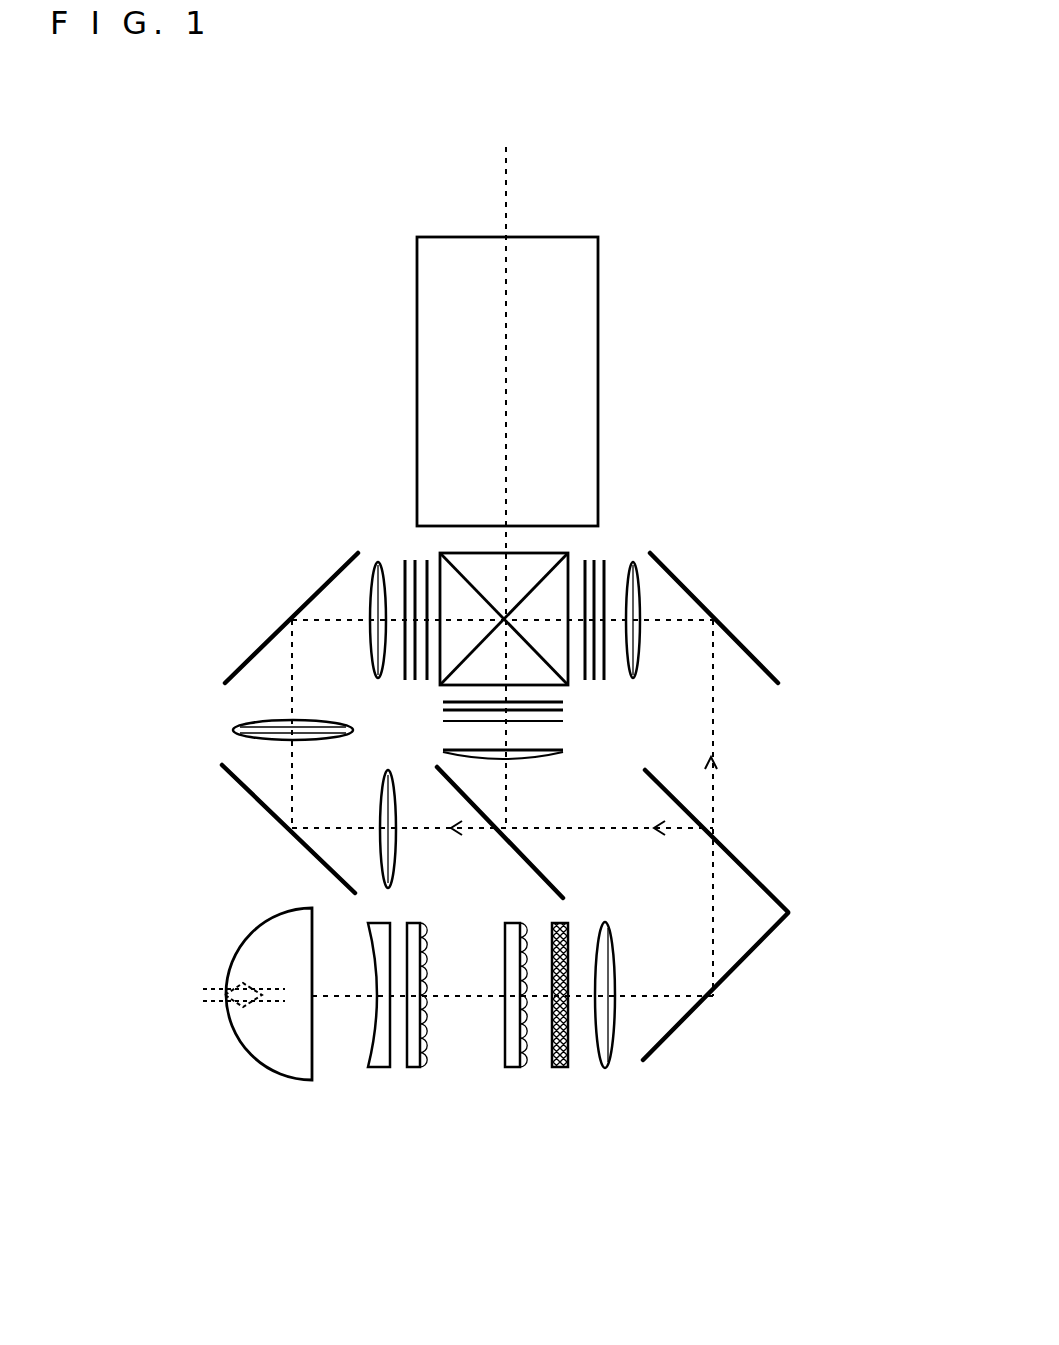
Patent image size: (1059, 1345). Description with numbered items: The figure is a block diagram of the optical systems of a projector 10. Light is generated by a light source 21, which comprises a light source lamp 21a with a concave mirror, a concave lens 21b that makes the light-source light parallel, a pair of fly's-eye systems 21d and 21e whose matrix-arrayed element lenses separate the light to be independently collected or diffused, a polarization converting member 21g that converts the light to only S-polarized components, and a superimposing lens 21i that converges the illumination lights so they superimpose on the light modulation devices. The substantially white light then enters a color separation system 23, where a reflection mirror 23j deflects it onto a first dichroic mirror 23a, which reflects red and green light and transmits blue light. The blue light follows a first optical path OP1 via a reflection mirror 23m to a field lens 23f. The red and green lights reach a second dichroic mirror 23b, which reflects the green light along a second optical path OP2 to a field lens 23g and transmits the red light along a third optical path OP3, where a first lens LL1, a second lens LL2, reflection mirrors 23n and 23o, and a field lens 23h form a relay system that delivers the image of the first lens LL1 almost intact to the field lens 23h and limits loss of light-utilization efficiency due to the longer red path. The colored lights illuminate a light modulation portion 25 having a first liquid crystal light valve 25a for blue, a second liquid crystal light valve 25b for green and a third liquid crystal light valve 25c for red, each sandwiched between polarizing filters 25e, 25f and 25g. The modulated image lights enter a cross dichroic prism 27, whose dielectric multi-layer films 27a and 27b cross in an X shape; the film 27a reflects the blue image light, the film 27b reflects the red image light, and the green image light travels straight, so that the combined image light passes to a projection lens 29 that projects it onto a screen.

The projector 10 is at (915, 170).
The projection lens 29 is at (573, 337).
The cross dichroic prism 27 is at (466, 541).
The dielectric multi-layer film 27a is at (448, 553).
The dielectric multi-layer film 27b is at (563, 553).
The light modulation portion 25 is at (622, 556).
The first liquid crystal light valve 25a is at (637, 640).
The second liquid crystal light valve 25b is at (563, 710).
The third liquid crystal light valve 25c is at (373, 593).
The polarizing filter 25e is at (605, 680).
The polarizing filter 25f is at (443, 705).
The polarizing filter 25g is at (403, 682).
The color separation system 23 is at (262, 852).
The first dichroic mirror 23a is at (750, 872).
The second dichroic mirror 23b is at (552, 886).
The field lens 23f is at (637, 613).
The field lens 23g is at (563, 752).
The field lens 23h is at (367, 647).
The reflection mirror 23j is at (682, 1032).
The reflection mirror 23m is at (765, 667).
The reflection mirror 23n is at (236, 792).
The reflection mirror 23o is at (242, 660).
The light source 21 is at (424, 1158).
The light source lamp 21a is at (268, 1070).
The concave lens 21b is at (370, 1067).
The fly's-eye system 21d is at (405, 1067).
The fly's-eye system 21e is at (500, 1067).
The polarization converting member 21g is at (558, 1067).
The superimposing lens 21i is at (605, 1068).
The first lens LL1 is at (396, 862).
The second lens LL2 is at (233, 732).
The first optical path OP1 is at (713, 713).
The second optical path OP2 is at (505, 790).
The third optical path OP3 is at (292, 700).